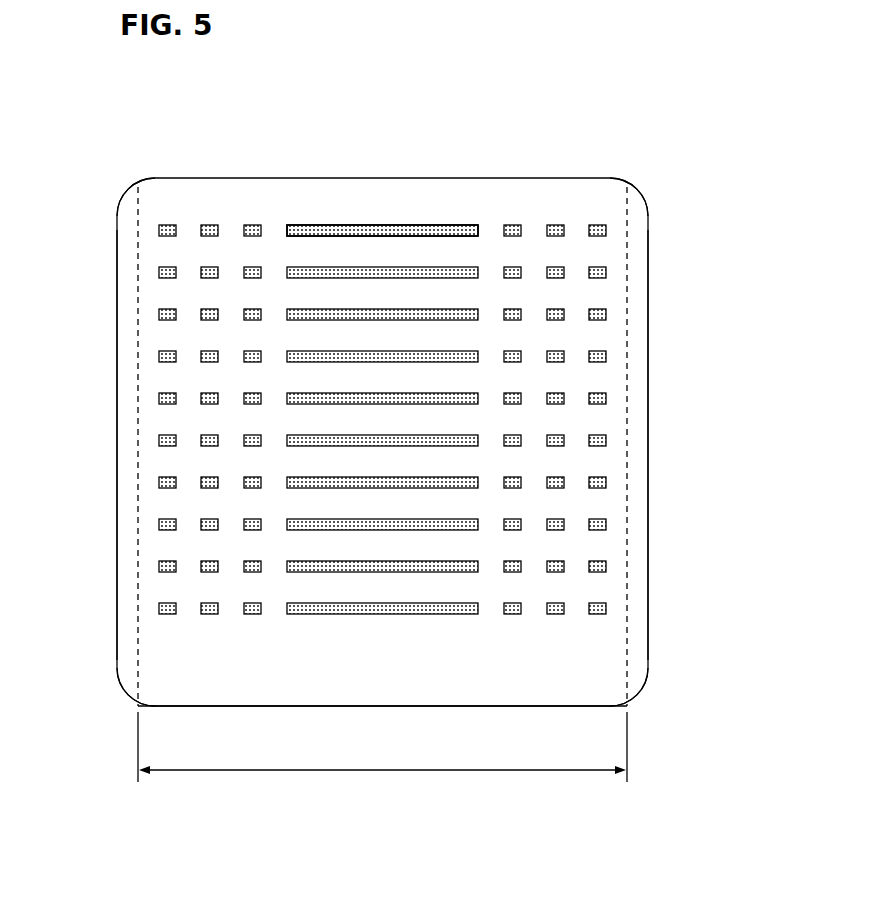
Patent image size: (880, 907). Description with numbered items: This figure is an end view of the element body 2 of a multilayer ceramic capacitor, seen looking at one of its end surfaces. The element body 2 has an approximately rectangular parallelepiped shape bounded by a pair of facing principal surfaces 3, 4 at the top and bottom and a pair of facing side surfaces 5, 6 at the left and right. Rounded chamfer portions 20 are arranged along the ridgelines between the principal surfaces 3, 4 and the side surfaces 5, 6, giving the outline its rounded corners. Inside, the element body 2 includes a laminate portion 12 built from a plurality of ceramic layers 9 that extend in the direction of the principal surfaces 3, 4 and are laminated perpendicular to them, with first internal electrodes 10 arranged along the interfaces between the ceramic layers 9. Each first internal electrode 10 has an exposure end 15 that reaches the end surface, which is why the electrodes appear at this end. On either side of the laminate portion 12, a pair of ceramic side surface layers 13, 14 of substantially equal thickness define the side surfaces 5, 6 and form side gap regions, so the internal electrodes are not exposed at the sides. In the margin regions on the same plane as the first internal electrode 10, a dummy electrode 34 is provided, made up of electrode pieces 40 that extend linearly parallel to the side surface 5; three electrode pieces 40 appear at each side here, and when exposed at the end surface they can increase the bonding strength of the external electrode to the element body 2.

The element body 2 is at (123, 72).
The principal surface 3 is at (520, 178).
The principal surface 4 is at (370, 706).
The side surface 5 is at (117, 424).
The side surface 6 is at (648, 378).
The ceramic layers 9 is at (395, 296).
The first internal electrode 10 is at (330, 222).
The laminate portion 12 is at (381, 771).
The ceramic side surface layer 13 is at (125, 542).
The ceramic side surface layer 14 is at (642, 548).
The exposure end 15 is at (443, 228).
The rounded chamfer portions 20 is at (646, 194).
The dummy electrode 34 is at (210, 222).
The electrode pieces 40 is at (164, 222).